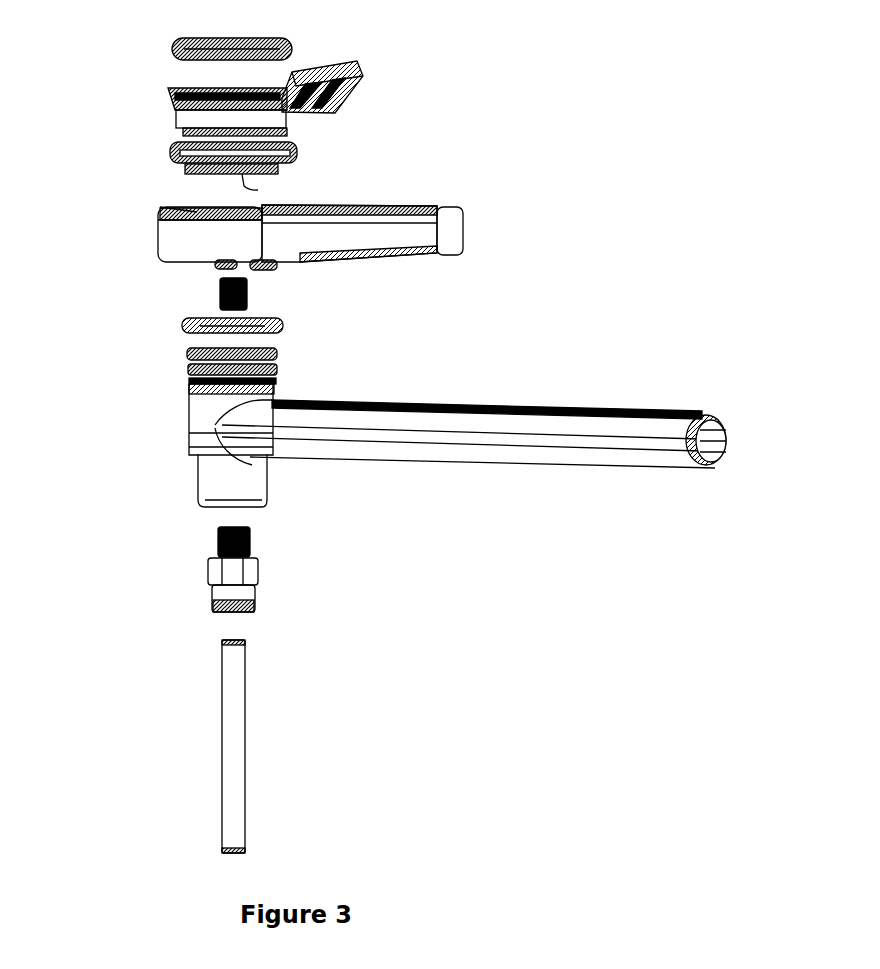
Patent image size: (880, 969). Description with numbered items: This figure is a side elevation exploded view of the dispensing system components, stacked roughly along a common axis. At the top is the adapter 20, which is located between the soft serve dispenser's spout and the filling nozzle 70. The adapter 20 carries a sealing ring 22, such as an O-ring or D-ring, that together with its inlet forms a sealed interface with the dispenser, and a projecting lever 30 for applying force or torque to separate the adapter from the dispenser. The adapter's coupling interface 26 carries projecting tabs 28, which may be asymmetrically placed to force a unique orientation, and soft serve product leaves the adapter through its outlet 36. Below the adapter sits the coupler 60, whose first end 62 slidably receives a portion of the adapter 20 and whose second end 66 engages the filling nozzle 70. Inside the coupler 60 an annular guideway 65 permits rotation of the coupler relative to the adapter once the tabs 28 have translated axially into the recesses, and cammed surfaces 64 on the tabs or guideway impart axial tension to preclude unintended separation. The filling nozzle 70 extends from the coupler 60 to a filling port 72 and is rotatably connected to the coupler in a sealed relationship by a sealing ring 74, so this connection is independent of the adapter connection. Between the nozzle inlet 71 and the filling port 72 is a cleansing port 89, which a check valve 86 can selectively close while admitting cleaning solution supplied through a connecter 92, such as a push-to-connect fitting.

The adapter 20 is at (155, 110).
The sealing ring 22 is at (292, 40).
The coupling interface 26 is at (327, 110).
The projecting tabs 28 is at (190, 152).
The projecting lever 30 is at (357, 72).
The outlet 36 is at (260, 206).
The coupler 60 is at (463, 233).
The first end 62 is at (258, 190).
The cammed surfaces 64 is at (227, 208).
The annular guideway 65 is at (197, 212).
The second end 66 is at (211, 263).
The filling nozzle 70 is at (568, 422).
The inlet 71 is at (217, 350).
The filling port 72 is at (719, 462).
The sealing ring 74 is at (280, 325).
The check valve 86 is at (218, 292).
The cleansing port 89 is at (216, 505).
The connecter 92 is at (255, 572).